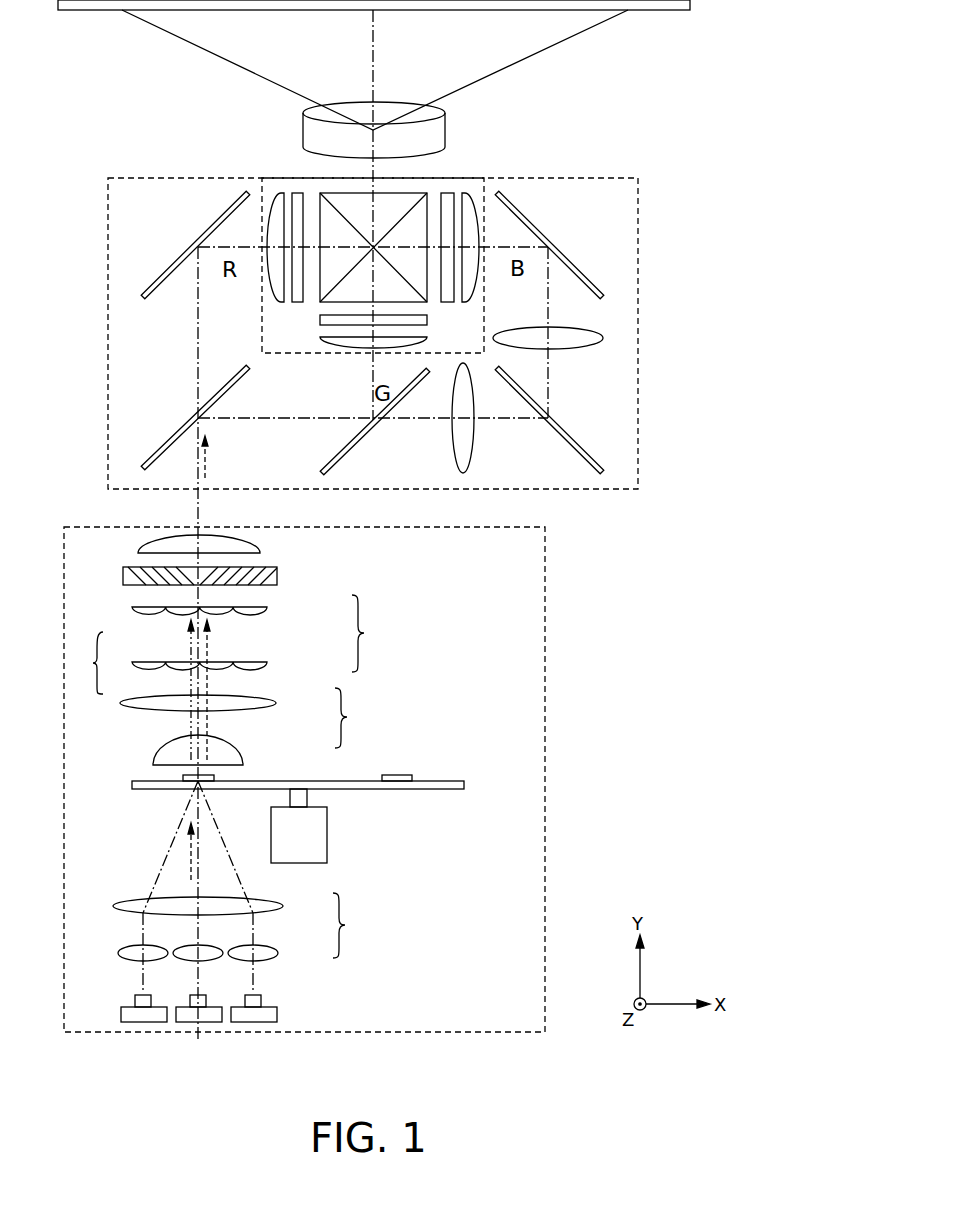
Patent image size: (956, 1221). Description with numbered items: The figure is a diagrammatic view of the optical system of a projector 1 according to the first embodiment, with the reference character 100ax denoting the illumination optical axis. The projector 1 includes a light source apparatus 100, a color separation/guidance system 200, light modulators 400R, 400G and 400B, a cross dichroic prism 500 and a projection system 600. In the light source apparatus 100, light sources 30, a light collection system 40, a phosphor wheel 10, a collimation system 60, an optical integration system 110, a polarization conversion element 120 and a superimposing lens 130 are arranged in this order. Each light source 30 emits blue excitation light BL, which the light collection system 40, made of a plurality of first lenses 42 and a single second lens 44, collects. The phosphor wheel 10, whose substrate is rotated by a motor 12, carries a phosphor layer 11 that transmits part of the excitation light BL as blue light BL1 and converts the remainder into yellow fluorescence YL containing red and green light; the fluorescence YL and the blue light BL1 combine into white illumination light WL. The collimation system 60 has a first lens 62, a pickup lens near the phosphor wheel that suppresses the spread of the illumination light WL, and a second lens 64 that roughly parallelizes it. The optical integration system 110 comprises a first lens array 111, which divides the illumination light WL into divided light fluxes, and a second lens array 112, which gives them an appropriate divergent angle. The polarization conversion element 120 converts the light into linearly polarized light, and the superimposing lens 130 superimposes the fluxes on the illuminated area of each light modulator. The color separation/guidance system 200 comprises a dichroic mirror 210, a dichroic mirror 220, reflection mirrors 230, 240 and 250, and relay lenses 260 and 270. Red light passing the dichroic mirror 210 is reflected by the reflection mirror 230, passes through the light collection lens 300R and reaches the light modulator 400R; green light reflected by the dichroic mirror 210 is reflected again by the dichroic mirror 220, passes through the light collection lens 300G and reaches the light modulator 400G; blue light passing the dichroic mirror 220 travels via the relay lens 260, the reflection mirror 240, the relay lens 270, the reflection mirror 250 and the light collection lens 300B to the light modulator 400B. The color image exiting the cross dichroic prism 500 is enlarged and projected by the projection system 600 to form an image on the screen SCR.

The projector 1 is at (649, 178).
The screen SCR is at (666, 12).
The projection system 600 is at (303, 128).
The color separation/guidance system 200 is at (108, 307).
The cross dichroic prism 500 is at (392, 196).
The light modulator 400R is at (298, 193).
The light collection lens 300R is at (278, 193).
The light modulator 400B is at (448, 193).
The light collection lens 300B is at (470, 193).
The light modulator 400G is at (320, 320).
The light collection lens 300G is at (330, 341).
The reflection mirror 230 is at (172, 266).
The dichroic mirror 210 is at (172, 438).
The reflection mirror 250 is at (565, 260).
The reflection mirror 240 is at (562, 423).
The dichroic mirror 220 is at (367, 433).
The relay lens 260 is at (452, 432).
The relay lens 270 is at (598, 332).
The illumination light WL is at (212, 457).
The illumination optical axis 100ax is at (198, 505).
The light source apparatus 100 is at (548, 572).
The superimposing lens 130 is at (262, 552).
The polarization conversion element 120 is at (279, 576).
The second lens array 112 is at (268, 608).
The first lens array 111 is at (268, 662).
The optical integration system 110 is at (382, 633).
The blue light BL1 is at (190, 645).
The fluorescence YL is at (207, 688).
The second lens 64 is at (277, 703).
The first lens 62 is at (225, 745).
The collimation system 60 is at (357, 718).
The phosphor wheel 10 is at (443, 770).
The phosphor layer 11 is at (395, 774).
The motor 12 is at (315, 836).
The excitation light BL is at (190, 855).
The second lens 44 is at (283, 906).
The first lenses 42 is at (278, 953).
The light collection system 40 is at (355, 925).
The light sources 30 is at (278, 1015).